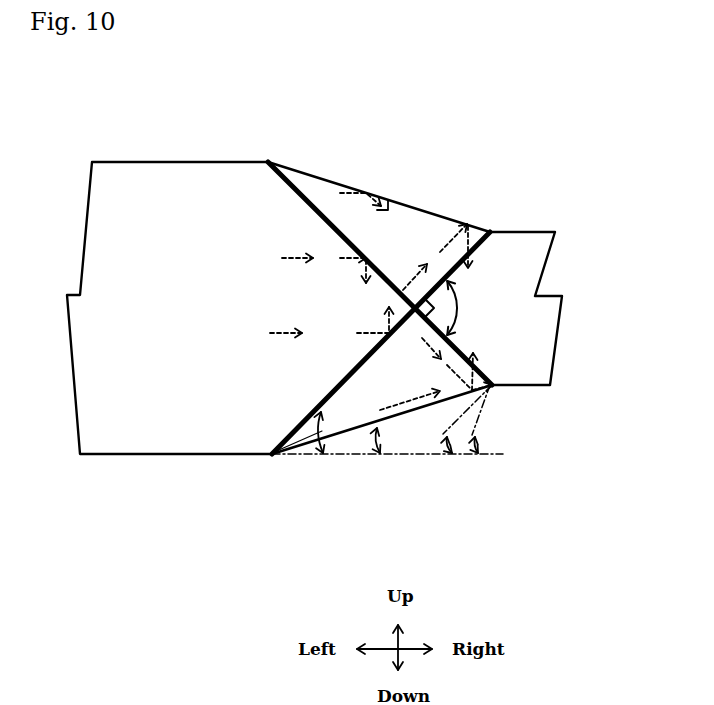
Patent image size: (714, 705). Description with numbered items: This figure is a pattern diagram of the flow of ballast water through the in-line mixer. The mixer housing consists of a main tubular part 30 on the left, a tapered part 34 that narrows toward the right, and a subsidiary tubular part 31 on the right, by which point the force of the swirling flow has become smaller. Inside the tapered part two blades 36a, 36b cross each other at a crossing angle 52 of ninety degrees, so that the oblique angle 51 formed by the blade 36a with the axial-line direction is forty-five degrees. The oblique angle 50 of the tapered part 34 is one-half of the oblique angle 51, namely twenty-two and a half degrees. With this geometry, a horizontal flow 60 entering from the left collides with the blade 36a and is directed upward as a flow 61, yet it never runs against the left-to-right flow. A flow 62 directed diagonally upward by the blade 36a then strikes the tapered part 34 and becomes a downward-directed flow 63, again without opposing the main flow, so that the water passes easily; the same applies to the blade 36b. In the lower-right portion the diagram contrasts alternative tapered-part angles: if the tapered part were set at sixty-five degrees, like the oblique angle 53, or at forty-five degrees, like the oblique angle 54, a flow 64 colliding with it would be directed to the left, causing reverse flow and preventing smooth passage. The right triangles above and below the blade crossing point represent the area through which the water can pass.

The main tubular part 30 is at (137, 162).
The subsidiary tubular part 31 is at (537, 232).
The tapered part 34 is at (331, 181).
The blade 36a is at (338, 390).
The blade 36b is at (348, 238).
The oblique angle 50 is at (396, 437).
The oblique angle 51 is at (281, 456).
The crossing angle 52 is at (470, 293).
The oblique angle 53 is at (478, 441).
The oblique angle 54 is at (468, 456).
The horizontal flow 60 is at (279, 337).
The flow 61 is at (362, 333).
The flow 62 is at (413, 300).
The downward-directed flow 63 is at (470, 242).
The flow 64 is at (463, 340).